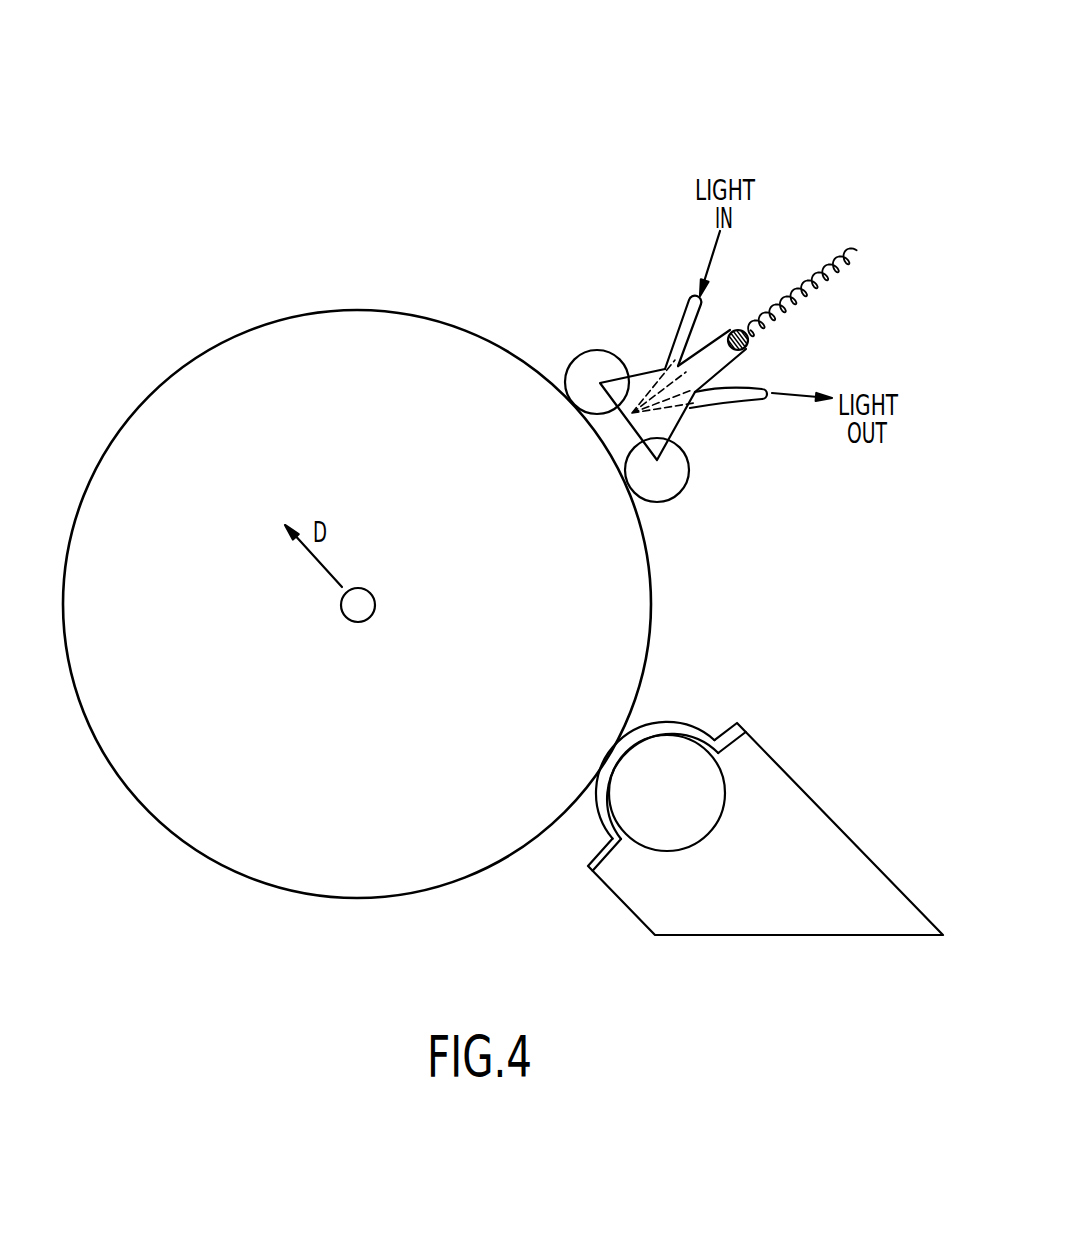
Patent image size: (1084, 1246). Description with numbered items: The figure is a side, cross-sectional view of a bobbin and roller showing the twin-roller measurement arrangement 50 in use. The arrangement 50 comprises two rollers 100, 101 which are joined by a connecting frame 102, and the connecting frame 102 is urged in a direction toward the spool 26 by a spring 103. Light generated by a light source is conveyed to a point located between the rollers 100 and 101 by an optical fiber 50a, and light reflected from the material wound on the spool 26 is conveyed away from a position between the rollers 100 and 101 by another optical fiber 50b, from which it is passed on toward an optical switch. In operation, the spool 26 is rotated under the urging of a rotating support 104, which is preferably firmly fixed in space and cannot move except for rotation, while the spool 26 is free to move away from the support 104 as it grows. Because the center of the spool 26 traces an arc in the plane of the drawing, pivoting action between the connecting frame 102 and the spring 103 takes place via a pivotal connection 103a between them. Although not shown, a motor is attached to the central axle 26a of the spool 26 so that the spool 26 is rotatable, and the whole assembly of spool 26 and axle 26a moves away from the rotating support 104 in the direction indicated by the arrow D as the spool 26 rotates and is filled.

The spool 26 is at (332, 880).
The central axle 26a is at (347, 608).
The twin-roller measurement arrangement 50 is at (702, 135).
The optical fiber 50a is at (680, 332).
The optical fiber 50b is at (735, 398).
The roller 100 is at (588, 368).
The roller 101 is at (665, 473).
The connecting frame 102 is at (748, 362).
The spring 103 is at (854, 260).
The pivotal connection 103a is at (733, 329).
The rotating support 104 is at (652, 838).